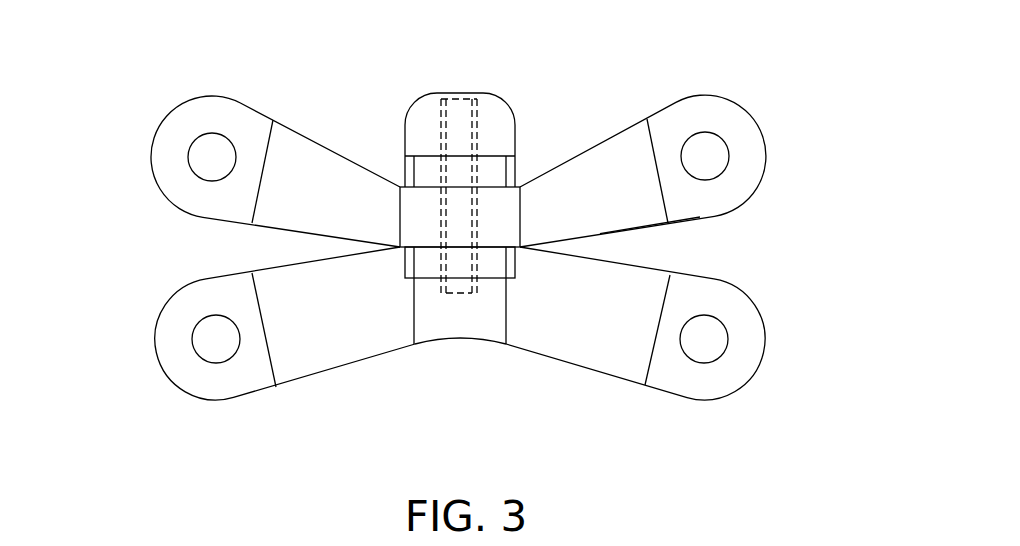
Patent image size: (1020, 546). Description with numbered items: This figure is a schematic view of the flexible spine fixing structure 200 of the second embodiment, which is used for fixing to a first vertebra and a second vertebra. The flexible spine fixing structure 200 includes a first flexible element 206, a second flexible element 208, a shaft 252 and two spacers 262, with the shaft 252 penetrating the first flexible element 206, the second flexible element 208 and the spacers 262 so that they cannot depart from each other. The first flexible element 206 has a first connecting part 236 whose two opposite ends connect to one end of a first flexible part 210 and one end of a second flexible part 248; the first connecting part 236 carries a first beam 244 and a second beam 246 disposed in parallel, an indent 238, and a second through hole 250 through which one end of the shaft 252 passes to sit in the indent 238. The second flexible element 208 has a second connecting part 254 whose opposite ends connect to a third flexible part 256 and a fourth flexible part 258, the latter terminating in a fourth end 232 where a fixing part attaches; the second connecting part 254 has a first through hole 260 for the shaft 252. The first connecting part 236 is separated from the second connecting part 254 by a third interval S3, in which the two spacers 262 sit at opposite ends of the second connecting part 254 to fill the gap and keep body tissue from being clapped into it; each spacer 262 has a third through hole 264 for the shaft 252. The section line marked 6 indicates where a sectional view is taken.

The flexible spine fixing structure 200 is at (478, 233).
The first flexible element 206 is at (762, 347).
The second flexible element 208 is at (769, 137).
The first flexible part 210 is at (317, 363).
The fourth end 232 is at (660, 236).
The first connecting part 236 is at (458, 330).
The indent 238 is at (447, 297).
The first beam 244 is at (410, 170).
The second beam 246 is at (515, 183).
The second flexible part 248 is at (598, 363).
The second through hole 250 is at (482, 95).
The shaft 252 is at (462, 154).
The second connecting part 254 is at (405, 196).
The third flexible part 256 is at (293, 138).
The fourth flexible part 258 is at (633, 138).
The first through hole 260 is at (455, 227).
The spacer 262 is at (427, 167).
The third through hole 264 is at (452, 263).
The third interval S3 is at (610, 223).
The section line 6-6' 6 is at (813, 206).